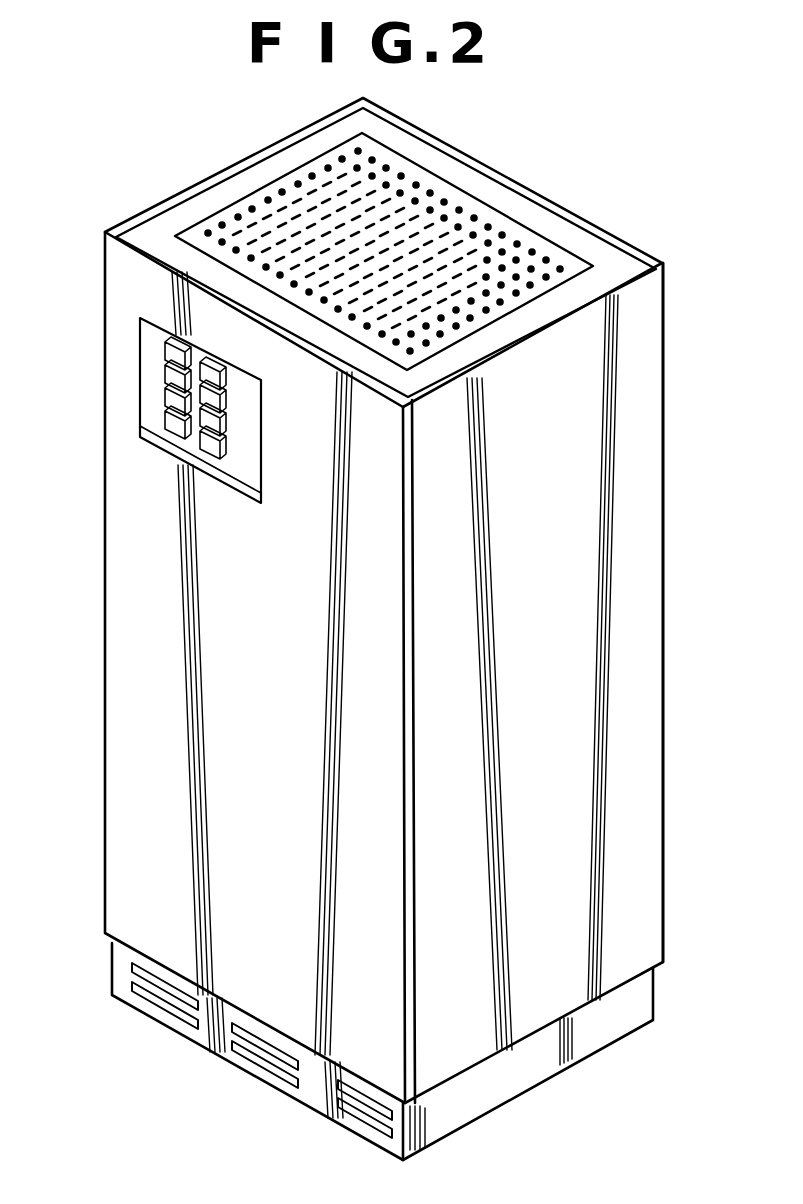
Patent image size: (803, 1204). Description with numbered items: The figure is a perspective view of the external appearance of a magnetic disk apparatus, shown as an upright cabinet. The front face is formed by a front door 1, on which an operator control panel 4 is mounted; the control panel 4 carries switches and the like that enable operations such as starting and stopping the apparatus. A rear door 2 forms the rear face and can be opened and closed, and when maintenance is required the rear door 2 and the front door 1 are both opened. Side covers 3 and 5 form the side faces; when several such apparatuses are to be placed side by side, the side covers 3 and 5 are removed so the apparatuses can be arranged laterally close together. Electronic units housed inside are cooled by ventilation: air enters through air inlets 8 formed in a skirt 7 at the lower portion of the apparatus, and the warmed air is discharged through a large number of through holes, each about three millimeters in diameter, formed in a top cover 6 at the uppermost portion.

The front door 1 is at (128, 286).
The rear door 2 is at (564, 214).
The side cover 3 is at (196, 194).
The operator control panel 4 is at (160, 410).
The side cover 5 is at (650, 363).
The top cover 6 is at (430, 208).
The skirt 7 is at (355, 1127).
The air inlet 8 is at (250, 1050).